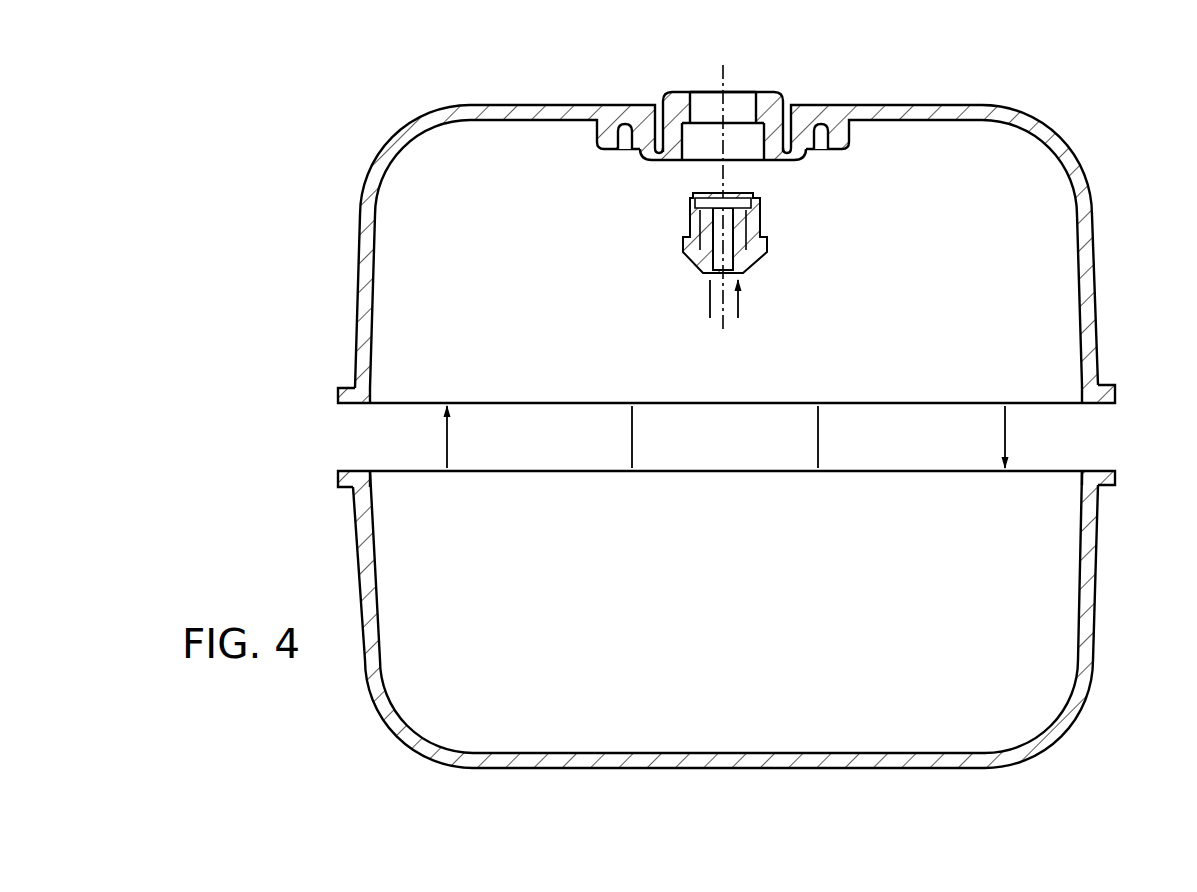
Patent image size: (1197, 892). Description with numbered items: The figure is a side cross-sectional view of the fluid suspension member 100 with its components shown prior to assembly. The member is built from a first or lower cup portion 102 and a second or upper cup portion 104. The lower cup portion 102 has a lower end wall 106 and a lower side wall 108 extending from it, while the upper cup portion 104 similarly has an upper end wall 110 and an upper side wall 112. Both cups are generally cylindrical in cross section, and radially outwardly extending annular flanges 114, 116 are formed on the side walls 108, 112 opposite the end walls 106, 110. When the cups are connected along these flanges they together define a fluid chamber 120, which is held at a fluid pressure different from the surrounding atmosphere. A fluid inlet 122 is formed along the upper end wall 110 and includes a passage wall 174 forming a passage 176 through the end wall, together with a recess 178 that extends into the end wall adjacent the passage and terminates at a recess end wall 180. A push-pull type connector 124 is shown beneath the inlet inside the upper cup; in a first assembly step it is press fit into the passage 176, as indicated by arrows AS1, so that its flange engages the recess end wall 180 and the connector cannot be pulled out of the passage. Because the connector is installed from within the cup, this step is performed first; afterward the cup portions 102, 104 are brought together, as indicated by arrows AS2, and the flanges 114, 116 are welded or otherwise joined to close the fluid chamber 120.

The fluid suspension member 100 is at (916, 90).
The lower cup portion 102 is at (422, 754).
The upper cup portion 104 is at (1047, 120).
The lower end wall 106 is at (680, 768).
The lower side wall 108 is at (1097, 594).
The upper end wall 110 is at (500, 105).
The upper side wall 112 is at (377, 312).
The annular flange 114 is at (1101, 468).
The annular flange 116 is at (345, 408).
The fluid chamber 120 is at (1047, 285).
The fluid inlet 122 is at (667, 88).
The push-pull type connector 124 is at (682, 249).
The passage wall 174 is at (772, 92).
The passage 176 is at (738, 98).
The recess 178 is at (750, 137).
The recess end wall 180 is at (688, 165).
The arrows AS1 is at (738, 318).
The arrows AS2 is at (1002, 437).